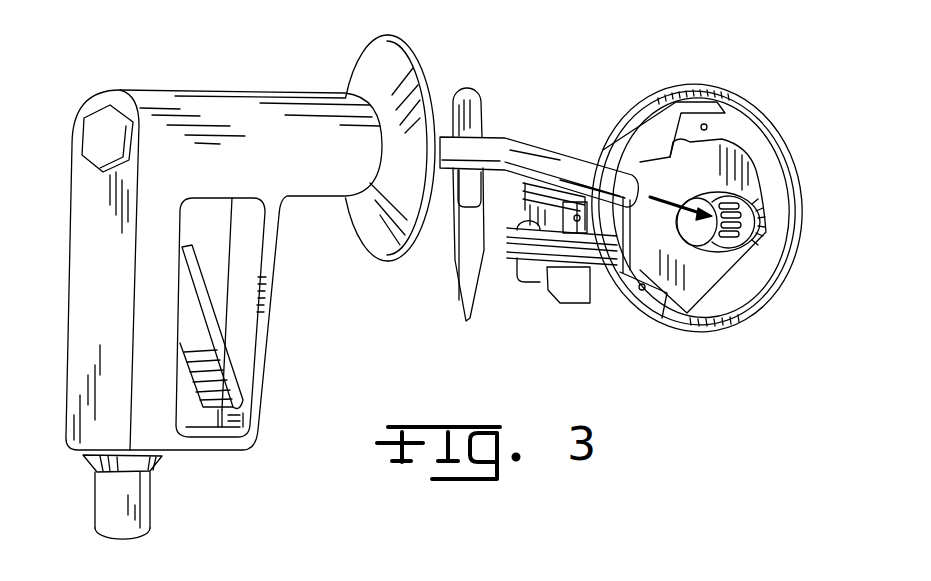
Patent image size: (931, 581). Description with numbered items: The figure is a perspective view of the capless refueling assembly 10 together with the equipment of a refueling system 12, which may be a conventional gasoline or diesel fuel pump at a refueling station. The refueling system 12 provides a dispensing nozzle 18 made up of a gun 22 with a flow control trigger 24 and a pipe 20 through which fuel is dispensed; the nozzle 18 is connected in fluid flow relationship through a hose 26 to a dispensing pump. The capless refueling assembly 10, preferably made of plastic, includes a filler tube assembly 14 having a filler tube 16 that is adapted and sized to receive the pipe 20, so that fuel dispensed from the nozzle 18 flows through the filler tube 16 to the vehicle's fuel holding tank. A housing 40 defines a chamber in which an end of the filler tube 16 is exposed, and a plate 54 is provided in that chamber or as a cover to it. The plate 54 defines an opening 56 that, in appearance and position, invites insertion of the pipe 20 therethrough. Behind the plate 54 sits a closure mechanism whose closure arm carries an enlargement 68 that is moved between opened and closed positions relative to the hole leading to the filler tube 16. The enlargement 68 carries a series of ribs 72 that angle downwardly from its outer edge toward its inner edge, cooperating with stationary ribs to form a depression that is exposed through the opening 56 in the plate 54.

The capless refueling assembly 10 is at (708, 193).
The refueling system 12 is at (202, 319).
The filler tube assembly 14 is at (708, 218).
The filler tube 16 is at (795, 250).
The dispensing nozzle 18 is at (312, 248).
The pipe 20 is at (517, 150).
The gun 22 is at (90, 283).
The flow control trigger 24 is at (227, 391).
The hose 26 is at (140, 513).
The housing 40 is at (753, 107).
The plate 54 is at (662, 318).
The opening 56 is at (702, 228).
The enlargement 68 is at (703, 241).
The ribs 72 is at (715, 252).